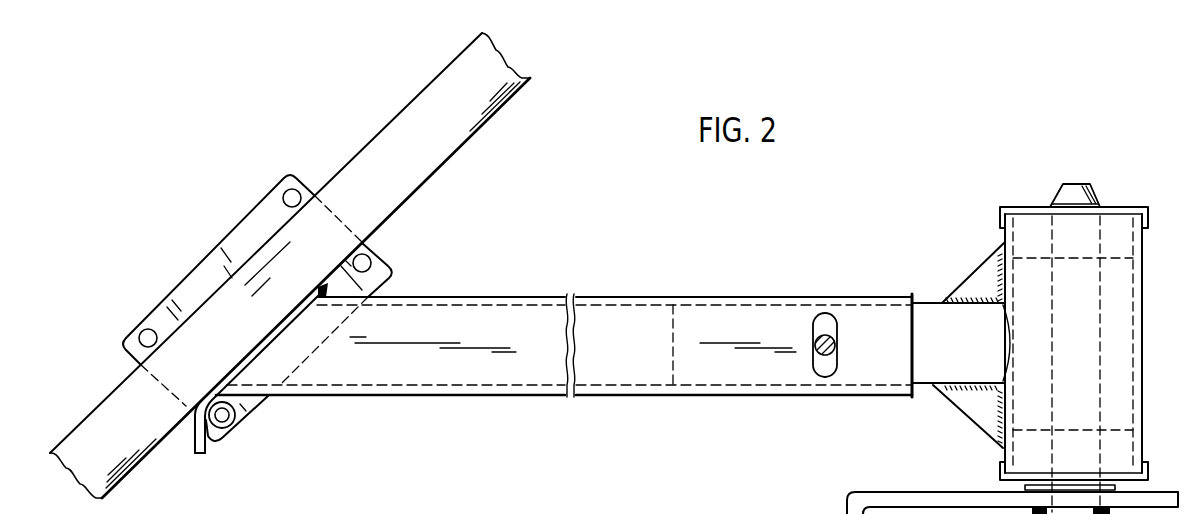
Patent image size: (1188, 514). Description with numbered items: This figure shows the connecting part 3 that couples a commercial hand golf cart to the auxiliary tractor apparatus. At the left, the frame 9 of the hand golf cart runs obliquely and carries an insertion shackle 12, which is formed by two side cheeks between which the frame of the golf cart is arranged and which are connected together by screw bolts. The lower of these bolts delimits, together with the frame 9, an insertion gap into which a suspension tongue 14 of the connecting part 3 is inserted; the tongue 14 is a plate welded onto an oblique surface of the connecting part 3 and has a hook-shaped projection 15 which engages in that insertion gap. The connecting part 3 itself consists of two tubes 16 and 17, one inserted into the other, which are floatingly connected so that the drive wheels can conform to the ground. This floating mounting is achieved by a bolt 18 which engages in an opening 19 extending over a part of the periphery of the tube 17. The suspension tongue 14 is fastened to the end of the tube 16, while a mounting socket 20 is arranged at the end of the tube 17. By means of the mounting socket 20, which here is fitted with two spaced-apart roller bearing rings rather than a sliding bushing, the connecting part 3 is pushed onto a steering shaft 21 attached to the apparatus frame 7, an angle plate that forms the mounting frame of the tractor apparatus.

The connecting part 3 is at (644, 260).
The apparatus frame 7 is at (892, 502).
The frame 9 is at (502, 79).
The insertion shackle 12 is at (203, 273).
The suspension tongue 14 is at (257, 358).
The hook-shaped projection 15 is at (205, 454).
The tube 16 is at (525, 310).
The tube 17 is at (928, 312).
The bolt 18 is at (825, 330).
The opening 19 is at (823, 367).
The mounting socket 20 is at (1033, 218).
The steering shaft 21 is at (1090, 186).